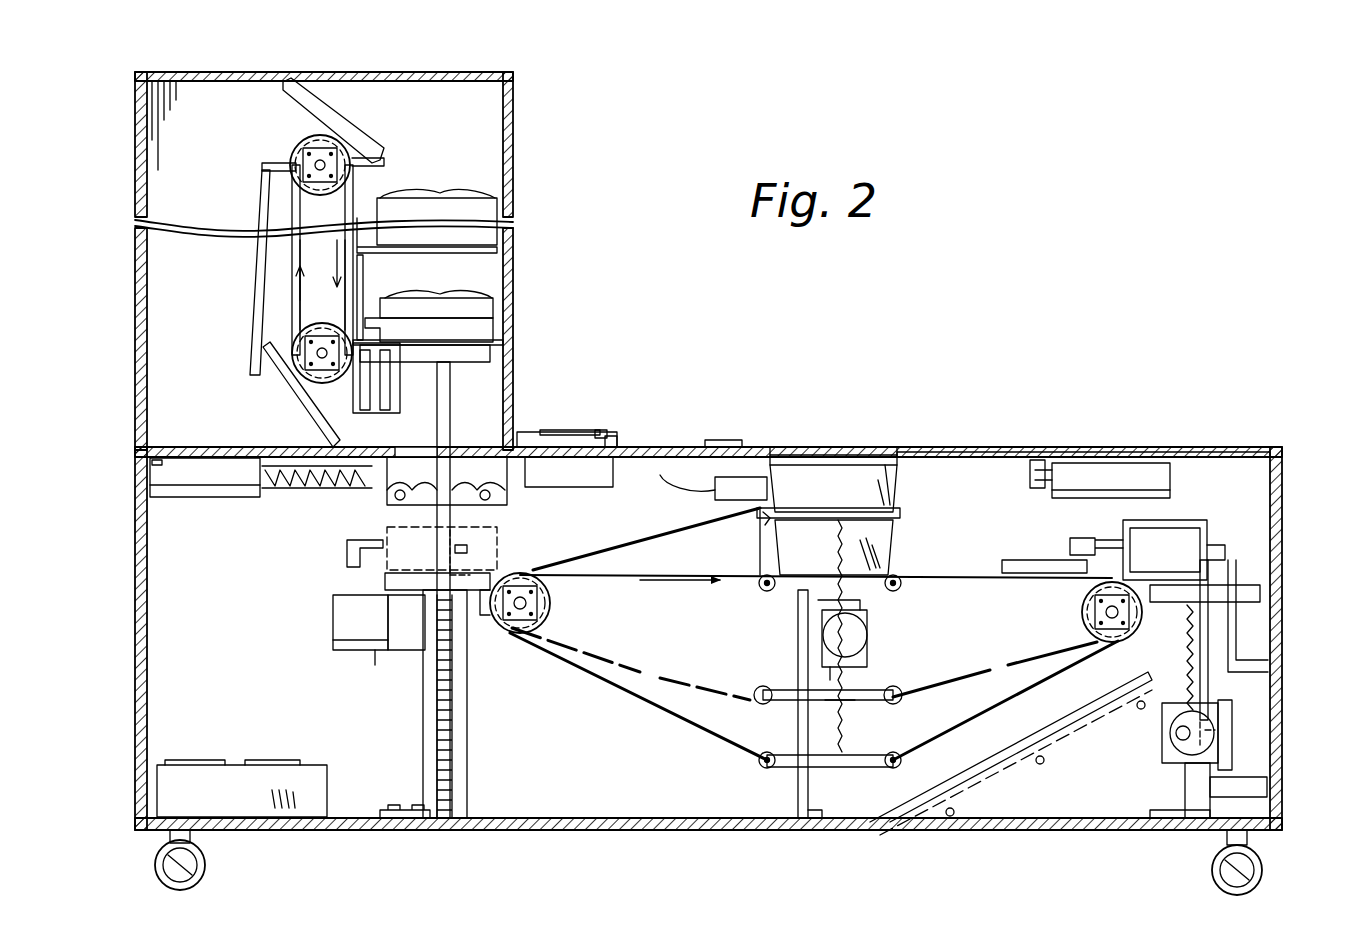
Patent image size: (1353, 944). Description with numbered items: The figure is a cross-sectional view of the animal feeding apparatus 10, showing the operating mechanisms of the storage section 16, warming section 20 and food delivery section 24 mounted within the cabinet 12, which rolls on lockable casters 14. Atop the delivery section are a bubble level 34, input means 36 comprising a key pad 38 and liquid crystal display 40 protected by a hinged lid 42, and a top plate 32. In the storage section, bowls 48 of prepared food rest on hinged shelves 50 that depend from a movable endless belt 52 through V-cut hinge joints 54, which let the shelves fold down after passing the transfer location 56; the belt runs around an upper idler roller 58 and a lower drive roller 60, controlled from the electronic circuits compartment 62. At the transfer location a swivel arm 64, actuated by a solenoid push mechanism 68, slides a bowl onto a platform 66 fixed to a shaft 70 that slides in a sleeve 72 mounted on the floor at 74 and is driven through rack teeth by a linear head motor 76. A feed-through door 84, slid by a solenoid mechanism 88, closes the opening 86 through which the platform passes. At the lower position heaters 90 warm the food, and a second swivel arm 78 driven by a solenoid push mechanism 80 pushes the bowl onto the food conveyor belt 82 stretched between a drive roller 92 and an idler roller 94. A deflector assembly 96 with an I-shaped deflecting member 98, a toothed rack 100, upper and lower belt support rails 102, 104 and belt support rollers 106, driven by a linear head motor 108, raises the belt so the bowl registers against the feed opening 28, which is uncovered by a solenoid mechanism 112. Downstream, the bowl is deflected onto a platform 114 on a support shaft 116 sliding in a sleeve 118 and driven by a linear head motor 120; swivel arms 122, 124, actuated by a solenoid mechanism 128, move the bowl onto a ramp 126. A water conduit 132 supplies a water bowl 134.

The animal feeding apparatus 10 is at (600, 340).
The cabinet 12 is at (518, 122).
The casters 14 is at (155, 862).
The storage section 16 is at (134, 315).
The warming section 20 is at (272, 540).
The food delivery section 24 is at (1000, 443).
The feed opening 28 is at (778, 448).
The top plate 32 is at (953, 445).
The bubble level 34 is at (728, 440).
The input means 36 is at (600, 428).
The key pad 38 is at (583, 430).
The liquid crystal display 40 is at (551, 430).
The hinged lid 42 is at (612, 436).
The bowls 48 is at (498, 210).
The hinged shelves 50 is at (500, 252).
The endless belt 52 is at (352, 186).
The V-cut hinge joints 54 is at (380, 152).
The transfer location 56 is at (503, 347).
The upper idler roller 58 is at (300, 145).
The lower drive roller 60 is at (292, 360).
The electronic circuits compartment 62 is at (220, 760).
The swivel arm 64 is at (493, 328).
The platform 66 is at (503, 362).
The solenoid operated push mechanism 68 is at (378, 410).
The shaft 70 is at (452, 395).
The sleeve 72 is at (462, 725).
The floor mounting 74 is at (405, 810).
The linear head motor 76 is at (340, 620).
The swivel arm 78 is at (347, 553).
The solenoid push mechanism 80 is at (480, 560).
The food conveyor belt 82 is at (700, 540).
The feed-through door 84 is at (462, 457).
The opening 86 is at (388, 455).
The solenoid mechanism 88 is at (150, 482).
The heaters 90 is at (383, 500).
The drive roller 92 is at (553, 607).
The idler roller 94 is at (1082, 606).
The deflector assembly 96 is at (925, 665).
The deflecting member 98 is at (800, 725).
The toothed rack 100 is at (845, 722).
The upper belt support rail 102 is at (765, 522).
The lower belt support rail 104 is at (775, 708).
The belt support rollers 106 is at (762, 592).
The linear head motor 108 is at (868, 648).
The solenoid mechanism 112 is at (1122, 470).
The platform 114 is at (1258, 595).
The support shaft 116 is at (1186, 642).
The sleeve 118 is at (1215, 795).
The linear head motor 120 is at (1215, 730).
The swivel arm 122 is at (1032, 565).
The swivel arm 124 is at (1255, 658).
The ramp 126 is at (1085, 725).
The solenoid mechanism 128 is at (1172, 530).
The water conduit 132 is at (690, 470).
The water bowl 134 is at (905, 500).